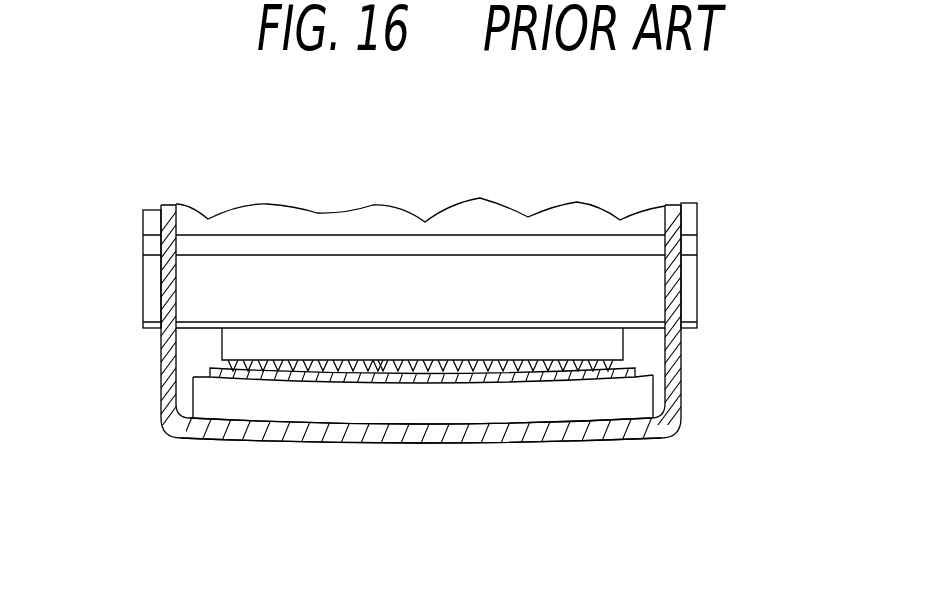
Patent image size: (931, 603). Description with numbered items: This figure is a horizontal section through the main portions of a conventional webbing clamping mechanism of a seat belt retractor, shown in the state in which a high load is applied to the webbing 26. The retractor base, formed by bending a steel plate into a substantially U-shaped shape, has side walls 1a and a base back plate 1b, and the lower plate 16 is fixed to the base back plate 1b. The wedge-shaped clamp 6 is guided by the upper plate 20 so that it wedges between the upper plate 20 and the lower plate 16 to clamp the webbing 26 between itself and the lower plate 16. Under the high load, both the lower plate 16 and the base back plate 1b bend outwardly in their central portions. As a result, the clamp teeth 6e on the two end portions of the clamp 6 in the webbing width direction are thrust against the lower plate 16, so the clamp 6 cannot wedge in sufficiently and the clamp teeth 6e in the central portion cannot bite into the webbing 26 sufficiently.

The side wall of housing 1a is at (168, 400).
The base back plate 1b is at (283, 432).
The upper plate 20 is at (247, 277).
The clamp 6 is at (482, 345).
The clamp teeth 6e is at (378, 366).
The webbing 26 is at (523, 370).
The lower plate 16 is at (462, 408).